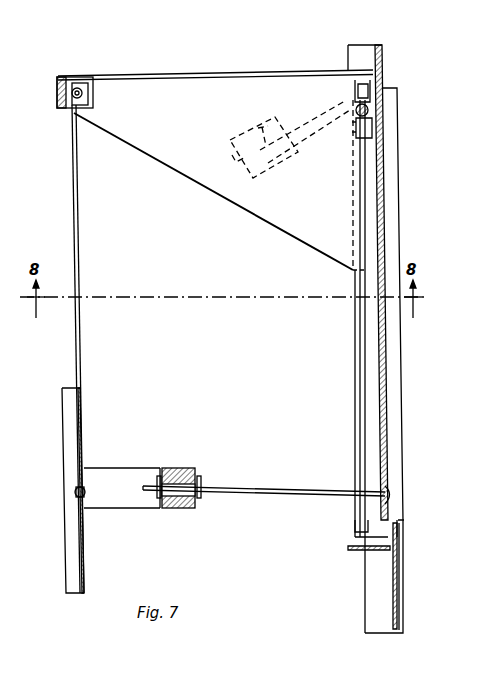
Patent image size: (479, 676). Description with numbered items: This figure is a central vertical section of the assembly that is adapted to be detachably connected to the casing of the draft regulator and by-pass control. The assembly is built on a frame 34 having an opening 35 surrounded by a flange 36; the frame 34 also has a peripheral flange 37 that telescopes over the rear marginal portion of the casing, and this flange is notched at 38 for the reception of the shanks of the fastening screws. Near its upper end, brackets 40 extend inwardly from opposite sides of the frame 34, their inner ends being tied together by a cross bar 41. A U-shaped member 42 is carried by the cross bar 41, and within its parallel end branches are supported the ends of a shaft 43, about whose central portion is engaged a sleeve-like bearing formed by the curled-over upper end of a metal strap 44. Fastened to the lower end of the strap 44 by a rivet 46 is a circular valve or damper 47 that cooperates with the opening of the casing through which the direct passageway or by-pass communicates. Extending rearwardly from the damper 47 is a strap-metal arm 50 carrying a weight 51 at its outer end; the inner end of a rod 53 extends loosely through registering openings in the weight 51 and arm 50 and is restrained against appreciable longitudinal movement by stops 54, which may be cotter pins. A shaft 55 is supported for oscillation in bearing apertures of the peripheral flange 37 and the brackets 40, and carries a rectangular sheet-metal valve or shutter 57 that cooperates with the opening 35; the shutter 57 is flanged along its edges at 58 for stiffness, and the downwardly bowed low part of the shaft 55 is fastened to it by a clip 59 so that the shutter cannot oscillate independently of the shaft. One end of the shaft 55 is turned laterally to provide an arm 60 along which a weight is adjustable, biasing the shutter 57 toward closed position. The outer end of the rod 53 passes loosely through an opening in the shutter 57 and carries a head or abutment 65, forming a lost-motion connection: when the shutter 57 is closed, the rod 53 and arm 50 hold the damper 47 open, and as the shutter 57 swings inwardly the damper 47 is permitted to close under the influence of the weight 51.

The frame 34 is at (373, 50).
The opening 35 is at (393, 455).
The flange 36 is at (392, 110).
The peripheral flange 37 is at (376, 590).
The notch 38 is at (357, 45).
The bracket 40 is at (182, 147).
The cross bar 41 is at (57, 90).
The U-shaped member 42 is at (90, 97).
The shaft 43 is at (90, 104).
The metal strap 44 is at (78, 204).
The rivet 46 is at (86, 486).
The valve or damper 47 is at (70, 558).
The arm 50 is at (106, 505).
The weight 51 is at (170, 468).
The rod 53 is at (215, 490).
The stop 54 is at (200, 478).
The shaft 55 is at (368, 108).
The valve or shutter 57 is at (380, 357).
The flange 58 is at (356, 84).
The clip 59 is at (358, 120).
The arm 60 is at (298, 115).
The head or abutment 65 is at (395, 497).